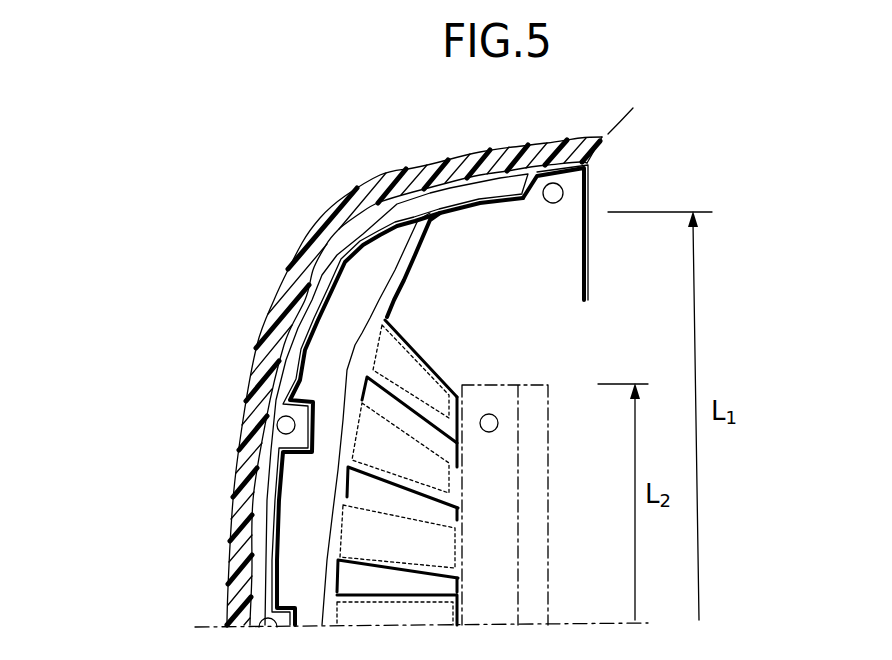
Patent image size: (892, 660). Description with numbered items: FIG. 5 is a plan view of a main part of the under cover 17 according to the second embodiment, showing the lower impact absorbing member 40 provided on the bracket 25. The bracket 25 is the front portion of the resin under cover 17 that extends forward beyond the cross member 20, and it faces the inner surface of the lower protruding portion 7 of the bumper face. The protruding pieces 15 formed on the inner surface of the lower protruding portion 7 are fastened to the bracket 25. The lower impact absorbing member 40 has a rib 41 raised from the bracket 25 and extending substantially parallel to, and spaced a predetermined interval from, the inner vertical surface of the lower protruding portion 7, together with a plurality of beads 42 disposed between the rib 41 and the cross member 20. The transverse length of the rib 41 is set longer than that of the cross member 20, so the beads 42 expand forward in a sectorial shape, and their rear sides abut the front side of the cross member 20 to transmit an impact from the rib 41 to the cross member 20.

The lower protruding portion 7 is at (398, 180).
The bracket 25 is at (493, 212).
The under cover 17 is at (660, 181).
The lower impact absorbing member 40 is at (413, 419).
The rib 41 is at (408, 273).
The beads 42 is at (436, 370).
The protruding pieces 15 is at (298, 408).
The cross member 20 is at (550, 488).